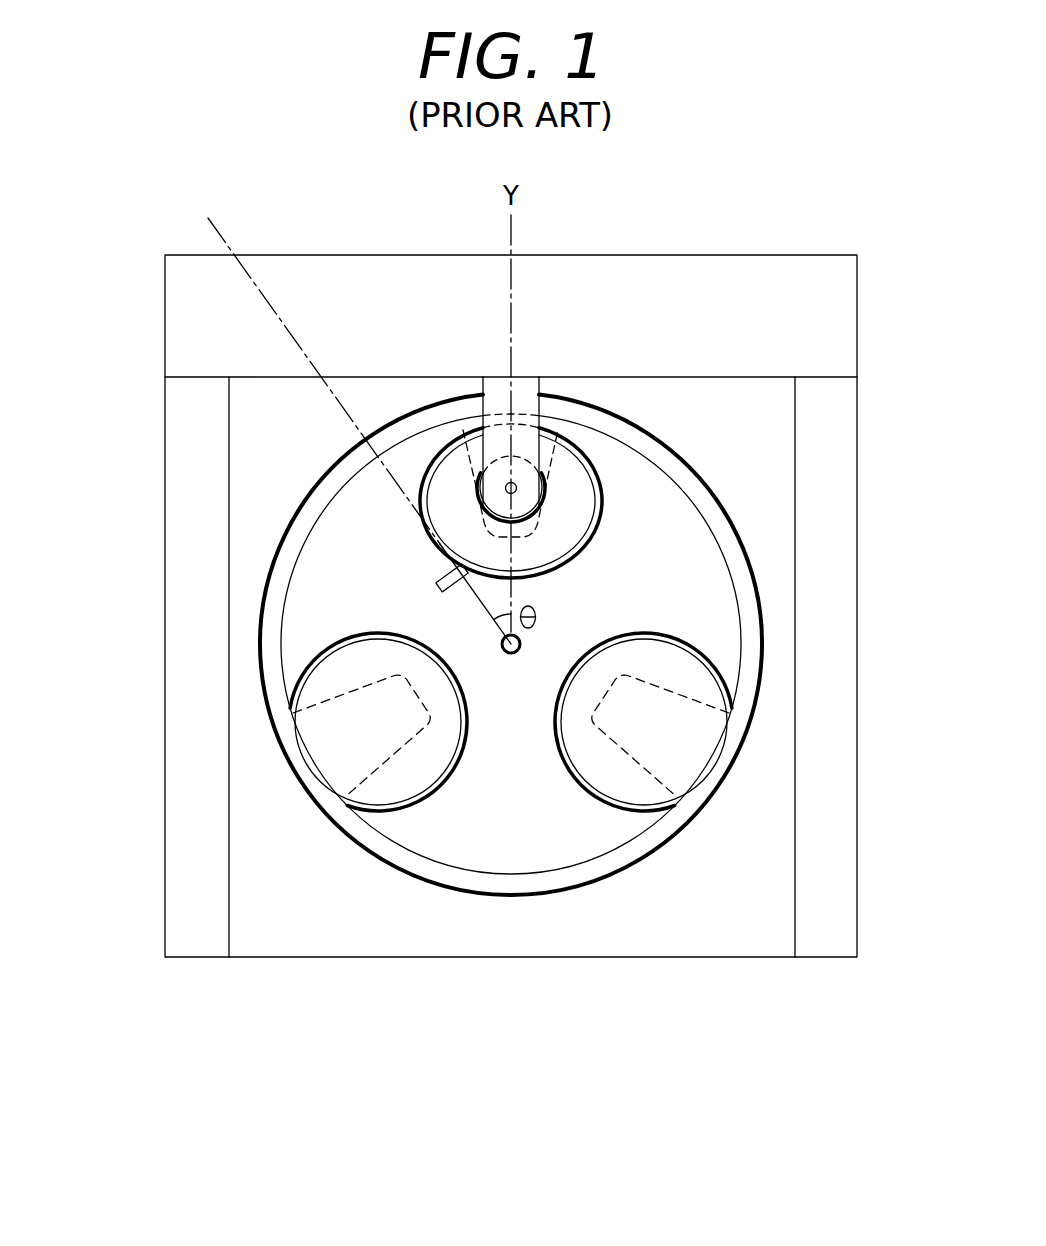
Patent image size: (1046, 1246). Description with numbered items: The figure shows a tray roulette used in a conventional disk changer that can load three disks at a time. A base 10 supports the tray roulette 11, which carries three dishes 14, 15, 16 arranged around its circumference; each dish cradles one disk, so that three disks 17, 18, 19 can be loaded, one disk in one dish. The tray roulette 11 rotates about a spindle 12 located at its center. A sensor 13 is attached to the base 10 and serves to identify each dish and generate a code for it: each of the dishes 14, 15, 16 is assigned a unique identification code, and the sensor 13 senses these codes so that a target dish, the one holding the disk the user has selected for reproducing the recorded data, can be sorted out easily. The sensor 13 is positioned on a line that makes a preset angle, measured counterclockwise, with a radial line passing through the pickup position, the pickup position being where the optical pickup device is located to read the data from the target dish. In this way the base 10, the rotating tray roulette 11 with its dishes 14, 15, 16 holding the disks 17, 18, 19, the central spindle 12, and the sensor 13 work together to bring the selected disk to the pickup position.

The base 10 is at (763, 485).
The tray roulette 11 is at (733, 590).
The spindle 12 is at (511, 655).
The sensor 13 is at (455, 566).
The dish 14 is at (427, 455).
The dish 15 is at (318, 655).
The dish 16 is at (612, 807).
The disk 17 is at (538, 420).
The disk 18 is at (330, 793).
The disk 19 is at (728, 748).